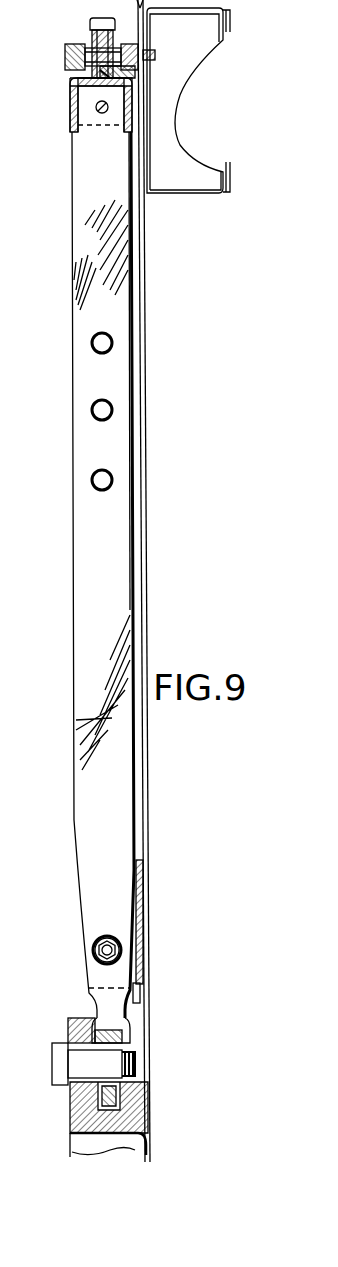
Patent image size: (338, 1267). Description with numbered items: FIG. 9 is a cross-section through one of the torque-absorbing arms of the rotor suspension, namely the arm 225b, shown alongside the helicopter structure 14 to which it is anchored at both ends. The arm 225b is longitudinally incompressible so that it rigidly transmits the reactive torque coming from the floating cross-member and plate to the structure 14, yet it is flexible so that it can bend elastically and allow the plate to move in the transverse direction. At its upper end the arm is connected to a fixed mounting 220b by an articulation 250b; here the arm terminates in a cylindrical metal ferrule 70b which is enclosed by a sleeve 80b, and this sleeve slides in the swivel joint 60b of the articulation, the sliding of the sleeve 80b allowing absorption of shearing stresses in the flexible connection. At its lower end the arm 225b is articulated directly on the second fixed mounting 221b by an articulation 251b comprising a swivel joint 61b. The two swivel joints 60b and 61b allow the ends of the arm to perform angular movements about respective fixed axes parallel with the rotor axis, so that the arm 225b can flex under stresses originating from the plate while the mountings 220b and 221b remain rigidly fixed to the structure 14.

The structure 14 is at (146, 335).
The swivel joint 60b is at (141, 39).
The metal ferrule 70b is at (98, 53).
The sleeve 80b is at (134, 72).
The mounting 220b is at (76, 64).
The arm 225b is at (110, 515).
The articulation 250b is at (74, 35).
The articulation 251b is at (158, 1023).
The swivel joint 61b is at (130, 1030).
The mounting 221b is at (133, 1108).